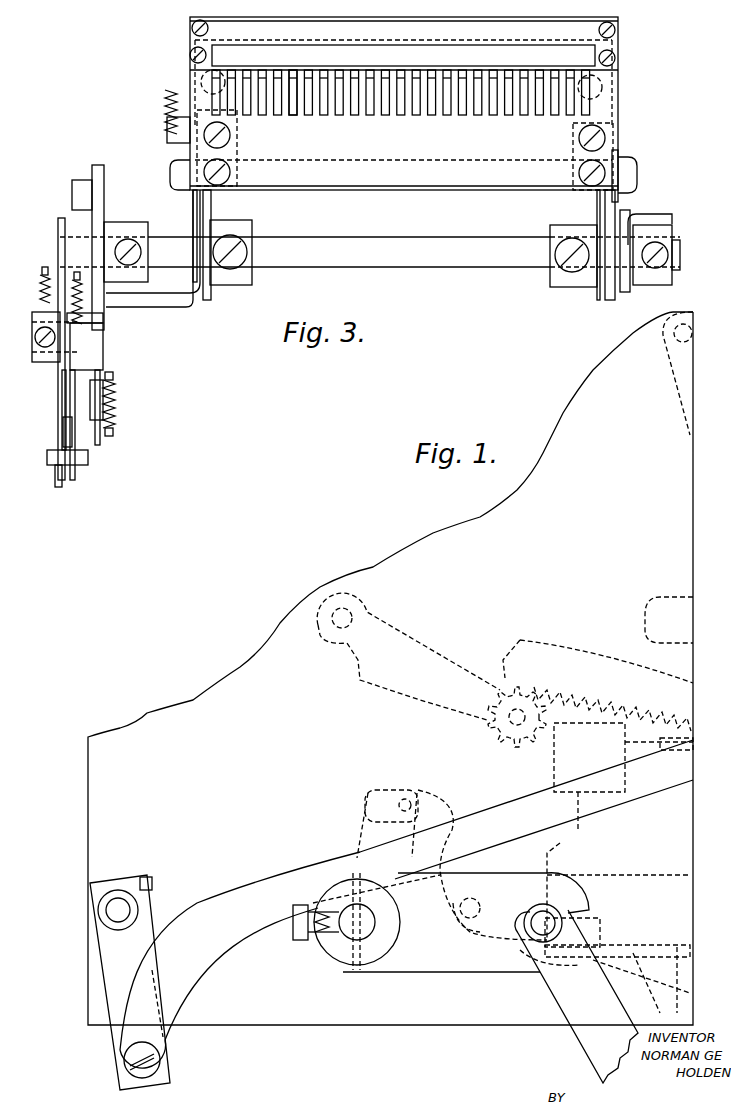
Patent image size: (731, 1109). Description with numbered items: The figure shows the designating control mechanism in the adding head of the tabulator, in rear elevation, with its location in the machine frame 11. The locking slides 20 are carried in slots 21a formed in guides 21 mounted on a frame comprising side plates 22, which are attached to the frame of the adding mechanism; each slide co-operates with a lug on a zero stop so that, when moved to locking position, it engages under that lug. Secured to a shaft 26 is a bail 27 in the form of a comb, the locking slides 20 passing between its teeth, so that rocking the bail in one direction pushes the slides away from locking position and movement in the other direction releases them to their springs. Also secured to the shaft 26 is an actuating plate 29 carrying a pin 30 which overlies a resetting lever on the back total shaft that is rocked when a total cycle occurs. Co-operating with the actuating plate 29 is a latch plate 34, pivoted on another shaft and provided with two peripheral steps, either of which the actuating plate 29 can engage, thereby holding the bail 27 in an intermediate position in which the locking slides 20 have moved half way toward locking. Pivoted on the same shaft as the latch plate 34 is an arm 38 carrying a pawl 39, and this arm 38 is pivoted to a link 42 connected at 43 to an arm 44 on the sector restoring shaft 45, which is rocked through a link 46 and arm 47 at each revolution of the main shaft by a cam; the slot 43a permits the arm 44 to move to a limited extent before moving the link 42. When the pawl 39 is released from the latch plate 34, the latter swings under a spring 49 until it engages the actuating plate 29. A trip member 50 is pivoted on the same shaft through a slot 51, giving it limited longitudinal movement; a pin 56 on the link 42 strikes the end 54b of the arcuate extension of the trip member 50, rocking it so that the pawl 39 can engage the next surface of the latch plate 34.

In FIG. 1, the frame 11 is at (662, 1000).
In FIG. 3, the locking slide 20 is at (260, 114).
In FIG. 3, the guide 21 is at (367, 138).
In FIG. 3, the slot 21a is at (293, 77).
In FIG. 3, the side plate 22 is at (190, 147).
In FIG. 3, the shaft 26 is at (373, 258).
In FIG. 3, the bail 27 is at (200, 280).
In FIG. 3, the actuating plate 29 is at (92, 170).
In FIG. 3, the pin 30 is at (72, 197).
In FIG. 3, the latch plate 34 is at (97, 343).
In FIG. 3, the arm 38 is at (83, 458).
In FIG. 3, the pawl 39 is at (115, 400).
In FIG. 3, the link 42 is at (80, 473).
In FIG. 1, the connection 43 is at (398, 793).
In FIG. 1, the slot 43a is at (378, 808).
In FIG. 1, the arm 44 is at (362, 838).
In FIG. 1, the sector restoring shaft 45 is at (346, 933).
In FIG. 1, the link 46 is at (597, 1047).
In FIG. 1, the arm 47 is at (408, 957).
In FIG. 3, the spring 49 is at (73, 283).
In FIG. 3, the trip member 50 is at (58, 428).
In FIG. 3, the slot 51 is at (75, 345).
In FIG. 3, the end of arcuate extension 54b is at (60, 487).
In FIG. 3, the pin 56 is at (60, 450).